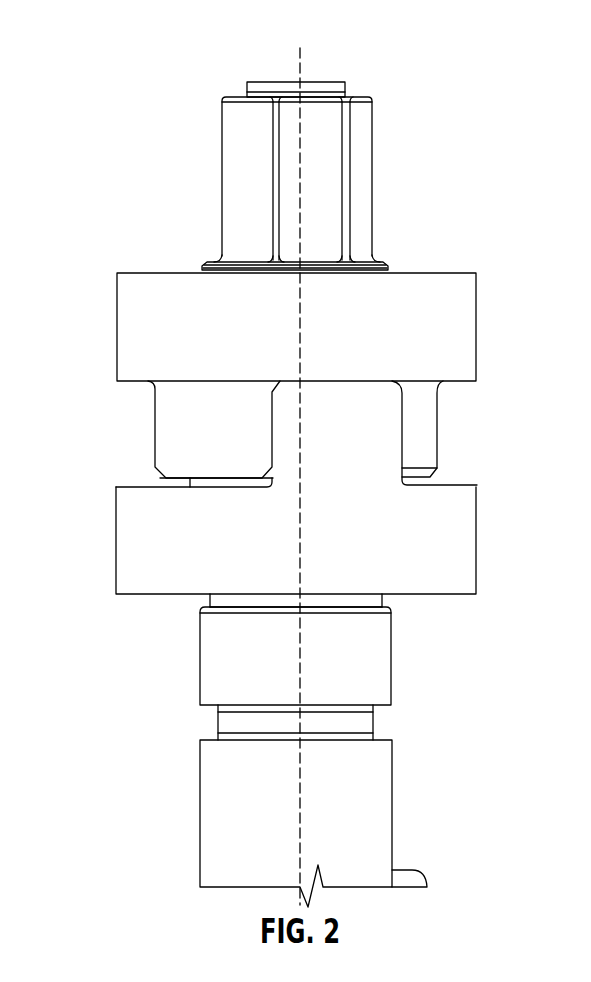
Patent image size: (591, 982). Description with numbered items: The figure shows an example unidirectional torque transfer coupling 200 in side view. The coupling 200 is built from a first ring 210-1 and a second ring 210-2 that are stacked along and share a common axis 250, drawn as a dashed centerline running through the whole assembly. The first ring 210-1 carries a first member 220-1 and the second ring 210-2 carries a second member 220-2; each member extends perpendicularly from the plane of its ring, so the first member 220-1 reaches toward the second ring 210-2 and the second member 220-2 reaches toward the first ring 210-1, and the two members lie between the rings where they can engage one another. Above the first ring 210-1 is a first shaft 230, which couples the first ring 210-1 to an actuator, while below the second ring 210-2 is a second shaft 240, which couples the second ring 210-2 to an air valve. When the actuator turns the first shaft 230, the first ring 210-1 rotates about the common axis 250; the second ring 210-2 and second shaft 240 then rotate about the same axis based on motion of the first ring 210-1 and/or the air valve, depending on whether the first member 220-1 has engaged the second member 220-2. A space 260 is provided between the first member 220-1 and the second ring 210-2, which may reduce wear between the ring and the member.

The unidirectional torque transfer coupling 200 is at (146, 63).
The first ring 210-1 is at (476, 326).
The second ring 210-2 is at (477, 542).
The first member 220-1 is at (155, 428).
The second member 220-2 is at (403, 442).
The first shaft 230 is at (372, 181).
The second shaft 240 is at (392, 789).
The common axis 250 is at (300, 70).
The space 260 is at (160, 479).